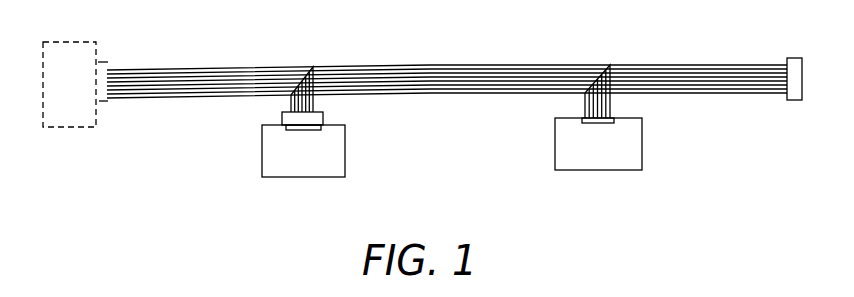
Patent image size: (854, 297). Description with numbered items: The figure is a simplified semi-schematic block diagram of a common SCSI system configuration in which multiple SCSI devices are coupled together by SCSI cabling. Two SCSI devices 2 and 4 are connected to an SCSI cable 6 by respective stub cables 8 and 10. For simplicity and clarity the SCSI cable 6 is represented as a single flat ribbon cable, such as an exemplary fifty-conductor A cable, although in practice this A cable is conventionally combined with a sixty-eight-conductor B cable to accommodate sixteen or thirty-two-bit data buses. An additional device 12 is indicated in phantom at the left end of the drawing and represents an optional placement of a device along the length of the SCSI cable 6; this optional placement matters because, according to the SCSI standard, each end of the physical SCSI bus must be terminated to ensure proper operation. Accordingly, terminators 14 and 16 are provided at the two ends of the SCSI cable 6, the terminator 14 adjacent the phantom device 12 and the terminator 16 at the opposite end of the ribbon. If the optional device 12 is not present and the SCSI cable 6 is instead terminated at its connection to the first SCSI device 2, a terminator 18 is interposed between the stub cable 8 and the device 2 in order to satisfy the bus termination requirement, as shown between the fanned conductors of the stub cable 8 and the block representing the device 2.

The SCSI device 2 is at (327, 162).
The SCSI device 4 is at (622, 142).
The SCSI cable 6 is at (418, 82).
The stub cable 8 is at (291, 101).
The stub cable 10 is at (598, 105).
The additional device 12 is at (72, 117).
The terminator 14 is at (105, 101).
The terminator 16 is at (793, 85).
The terminator 18 is at (317, 117).